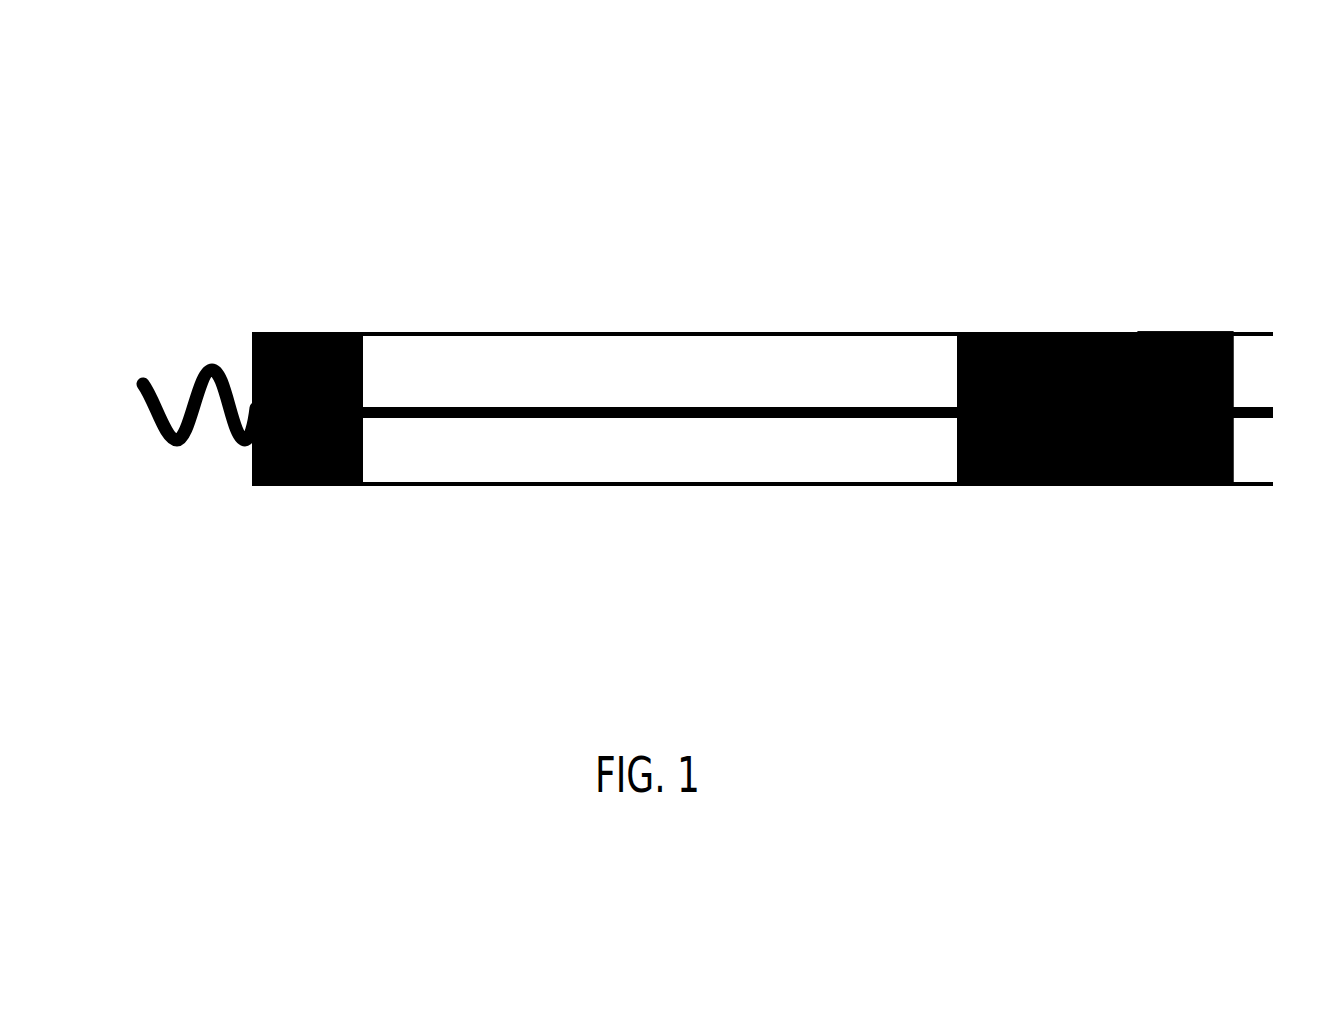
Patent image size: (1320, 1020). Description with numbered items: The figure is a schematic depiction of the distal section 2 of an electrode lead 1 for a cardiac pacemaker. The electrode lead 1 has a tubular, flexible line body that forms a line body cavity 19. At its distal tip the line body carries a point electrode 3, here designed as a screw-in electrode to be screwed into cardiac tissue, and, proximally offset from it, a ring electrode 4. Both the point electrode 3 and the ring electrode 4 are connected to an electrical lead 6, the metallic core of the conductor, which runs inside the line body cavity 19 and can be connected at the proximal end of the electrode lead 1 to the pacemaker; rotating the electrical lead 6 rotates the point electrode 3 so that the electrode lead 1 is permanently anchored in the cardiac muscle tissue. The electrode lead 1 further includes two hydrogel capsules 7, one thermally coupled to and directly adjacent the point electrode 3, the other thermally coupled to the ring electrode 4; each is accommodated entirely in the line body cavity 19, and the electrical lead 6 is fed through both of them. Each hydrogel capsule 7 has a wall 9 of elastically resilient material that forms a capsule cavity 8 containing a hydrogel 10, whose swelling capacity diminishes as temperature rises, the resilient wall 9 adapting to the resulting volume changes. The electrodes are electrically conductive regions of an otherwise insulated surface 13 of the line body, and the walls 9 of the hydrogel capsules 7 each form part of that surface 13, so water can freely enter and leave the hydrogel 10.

The electrode lead 1 is at (377, 218).
The distal section 2 is at (740, 333).
The point electrode 3 is at (208, 365).
The ring electrode 4 is at (1062, 325).
The electrical lead 6 is at (873, 413).
The hydrogel capsule 7 is at (298, 484).
The capsule cavity 8 is at (743, 531).
The wall 9 is at (292, 328).
The hydrogel 10 is at (342, 362).
The surface 13 is at (722, 486).
The line body cavity 19 is at (659, 473).